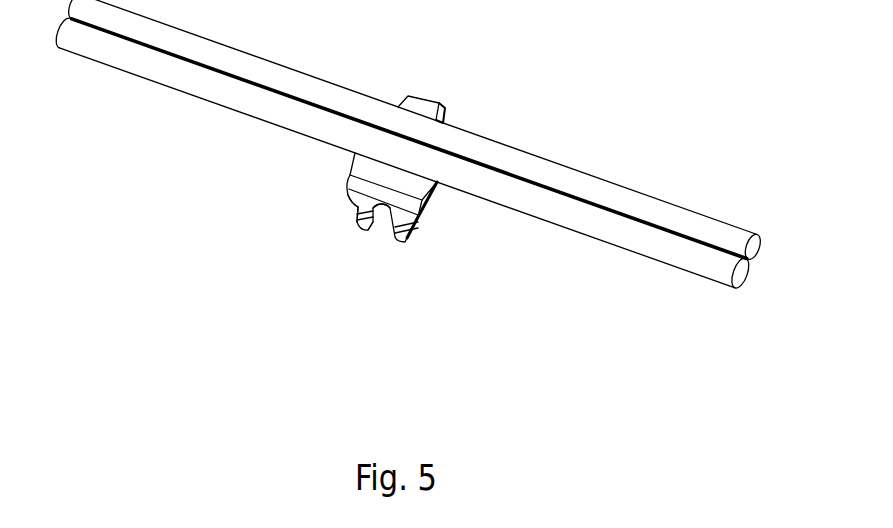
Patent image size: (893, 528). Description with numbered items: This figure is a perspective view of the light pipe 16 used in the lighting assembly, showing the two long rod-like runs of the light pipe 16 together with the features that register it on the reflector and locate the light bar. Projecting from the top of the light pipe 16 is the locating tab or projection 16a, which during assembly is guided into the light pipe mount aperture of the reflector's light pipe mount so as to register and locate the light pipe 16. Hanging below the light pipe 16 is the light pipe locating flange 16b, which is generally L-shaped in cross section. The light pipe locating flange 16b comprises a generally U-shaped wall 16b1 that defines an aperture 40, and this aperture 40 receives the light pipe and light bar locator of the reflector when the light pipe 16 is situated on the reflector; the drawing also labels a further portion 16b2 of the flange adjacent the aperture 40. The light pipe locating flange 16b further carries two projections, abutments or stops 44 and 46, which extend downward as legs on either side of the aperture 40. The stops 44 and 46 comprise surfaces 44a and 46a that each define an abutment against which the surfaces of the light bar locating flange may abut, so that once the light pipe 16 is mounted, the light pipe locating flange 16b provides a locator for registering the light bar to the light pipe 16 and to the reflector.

The light pipe 16 is at (588, 238).
The locating tab or projection 16a is at (447, 104).
The light pipe locating flange 16b is at (430, 212).
The generally U-shaped wall 16b1 is at (357, 208).
The clip notch 16b2 is at (383, 207).
The aperture 40 is at (373, 240).
The projection, abutment or stop 44 is at (365, 229).
The surface 44a is at (355, 220).
The projection, abutment or stop 46 is at (408, 243).
The surface 46a is at (413, 243).